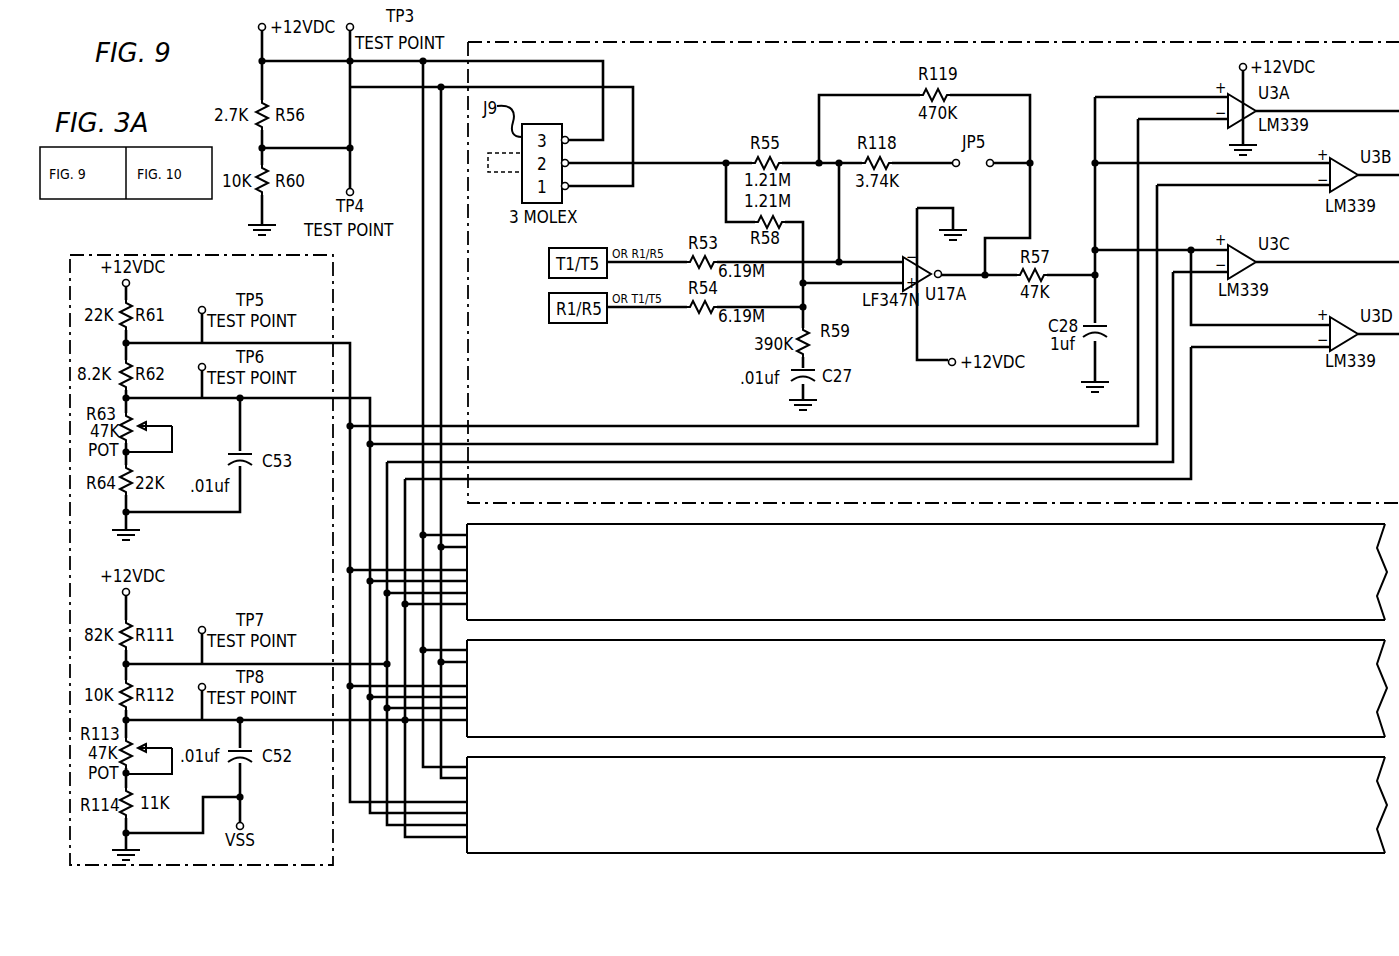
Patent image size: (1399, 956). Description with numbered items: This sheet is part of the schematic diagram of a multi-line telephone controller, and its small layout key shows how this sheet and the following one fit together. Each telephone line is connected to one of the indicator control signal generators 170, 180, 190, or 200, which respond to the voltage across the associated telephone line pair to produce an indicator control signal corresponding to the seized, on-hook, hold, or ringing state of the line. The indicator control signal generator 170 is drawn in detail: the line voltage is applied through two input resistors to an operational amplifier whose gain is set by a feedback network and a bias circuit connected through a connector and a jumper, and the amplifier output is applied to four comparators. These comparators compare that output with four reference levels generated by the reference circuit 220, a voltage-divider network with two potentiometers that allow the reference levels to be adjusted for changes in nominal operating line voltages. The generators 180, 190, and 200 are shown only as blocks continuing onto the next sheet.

The indicator control signal generator 170 is at (1370, 486).
The indicator control signal generator 180 is at (1372, 608).
The indicator control signal generator 190 is at (1372, 726).
The indicator control signal generator 200 is at (1372, 842).
The reference circuit 220 is at (282, 581).